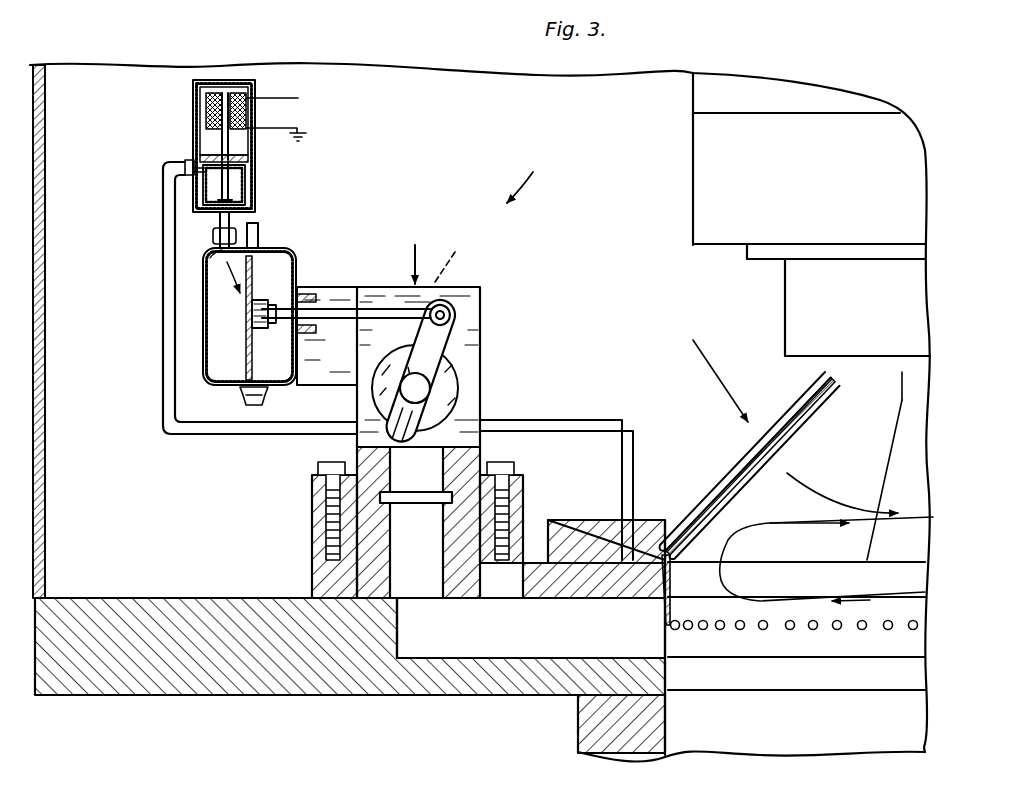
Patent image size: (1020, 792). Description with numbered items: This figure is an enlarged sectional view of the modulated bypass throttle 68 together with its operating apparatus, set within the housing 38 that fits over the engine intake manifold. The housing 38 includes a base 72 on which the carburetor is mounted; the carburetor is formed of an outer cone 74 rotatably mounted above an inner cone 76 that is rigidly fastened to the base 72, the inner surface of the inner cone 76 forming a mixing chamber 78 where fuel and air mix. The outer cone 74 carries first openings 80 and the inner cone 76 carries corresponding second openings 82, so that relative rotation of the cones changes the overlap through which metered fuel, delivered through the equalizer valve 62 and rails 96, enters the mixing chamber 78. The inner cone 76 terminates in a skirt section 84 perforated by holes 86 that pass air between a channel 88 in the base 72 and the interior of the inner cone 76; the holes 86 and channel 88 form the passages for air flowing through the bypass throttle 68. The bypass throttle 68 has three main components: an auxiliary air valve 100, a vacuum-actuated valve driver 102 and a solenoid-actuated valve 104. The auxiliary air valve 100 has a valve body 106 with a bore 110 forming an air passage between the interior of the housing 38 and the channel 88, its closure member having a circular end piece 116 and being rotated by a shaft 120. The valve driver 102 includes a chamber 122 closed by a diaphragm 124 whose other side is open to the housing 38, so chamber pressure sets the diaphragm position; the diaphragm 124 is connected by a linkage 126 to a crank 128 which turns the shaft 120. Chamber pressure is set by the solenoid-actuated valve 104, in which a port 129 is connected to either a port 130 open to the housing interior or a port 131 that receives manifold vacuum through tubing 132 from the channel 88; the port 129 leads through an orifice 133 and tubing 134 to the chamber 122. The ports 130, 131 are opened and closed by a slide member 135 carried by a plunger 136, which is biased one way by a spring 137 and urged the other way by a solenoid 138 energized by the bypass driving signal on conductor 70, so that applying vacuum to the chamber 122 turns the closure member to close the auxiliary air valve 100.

The housing 38 is at (45, 83).
The equalizer valve 62 is at (693, 188).
The bypass throttle 68 is at (532, 177).
The conductor 70 is at (298, 98).
The base 72 is at (128, 695).
The outer cone 74 is at (725, 487).
The inner cone 76 is at (735, 500).
The mixing chamber 78 is at (858, 472).
The first openings 80 is at (812, 397).
The second openings 82 is at (900, 404).
The skirt section 84 is at (672, 590).
The holes 86 is at (837, 630).
The channel 88 is at (572, 640).
The rails 96 is at (748, 455).
The auxiliary air valve 100 is at (484, 288).
The vacuum-actuated valve driver 102 is at (298, 250).
The solenoid-actuated valve 104 is at (190, 78).
The valve body 106 is at (480, 397).
The bore 110 is at (450, 259).
The end piece 116 is at (388, 395).
The shaft 120 is at (421, 386).
The chamber 122 is at (240, 343).
The diaphragm 124 is at (290, 381).
The linkage 126 is at (338, 310).
The crank 128 is at (446, 330).
The port 129 is at (232, 200).
The port 130 is at (250, 195).
The port 131 is at (191, 160).
The tubing 132 is at (163, 256).
The orifice 133 is at (215, 255).
The tubing 134 is at (216, 242).
The slide member 135 is at (200, 190).
The plunger 136 is at (222, 137).
The spring 137 is at (226, 95).
The solenoid 138 is at (250, 117).